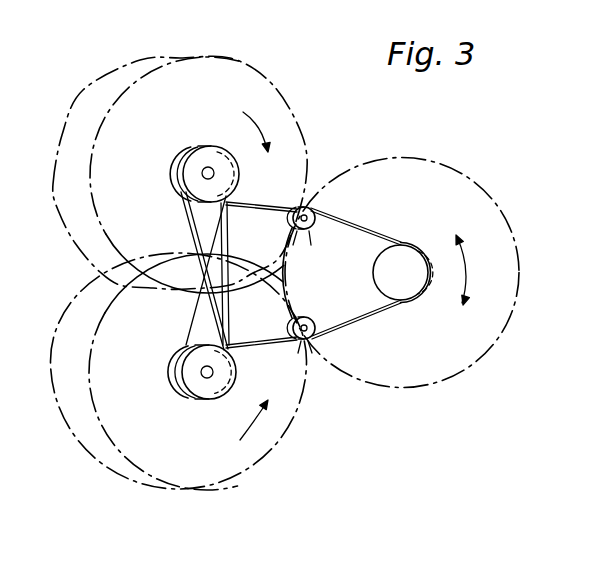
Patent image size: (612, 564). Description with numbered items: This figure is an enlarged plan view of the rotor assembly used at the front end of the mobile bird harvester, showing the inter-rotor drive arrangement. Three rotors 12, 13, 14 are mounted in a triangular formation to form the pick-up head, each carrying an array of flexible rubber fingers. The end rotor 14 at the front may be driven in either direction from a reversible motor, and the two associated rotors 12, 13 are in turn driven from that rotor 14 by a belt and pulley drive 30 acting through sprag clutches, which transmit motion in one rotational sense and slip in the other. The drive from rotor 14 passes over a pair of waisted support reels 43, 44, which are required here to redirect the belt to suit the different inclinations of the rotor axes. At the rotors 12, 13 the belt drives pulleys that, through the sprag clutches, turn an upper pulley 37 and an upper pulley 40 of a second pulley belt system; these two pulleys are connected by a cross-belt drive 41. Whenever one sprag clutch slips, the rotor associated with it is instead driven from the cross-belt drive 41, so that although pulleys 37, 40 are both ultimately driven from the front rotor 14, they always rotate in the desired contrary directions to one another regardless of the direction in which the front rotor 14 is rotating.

The rotor 12 is at (228, 58).
The rotor 13 is at (226, 486).
The end rotor 14 is at (489, 192).
The belt and pulley drive 30 is at (372, 203).
The upper pulley 37 is at (205, 158).
The upper pulley 40 is at (202, 395).
The cross-belt drive 41 is at (283, 271).
The waisted support reel 43 is at (306, 230).
The waisted support reel 44 is at (310, 320).